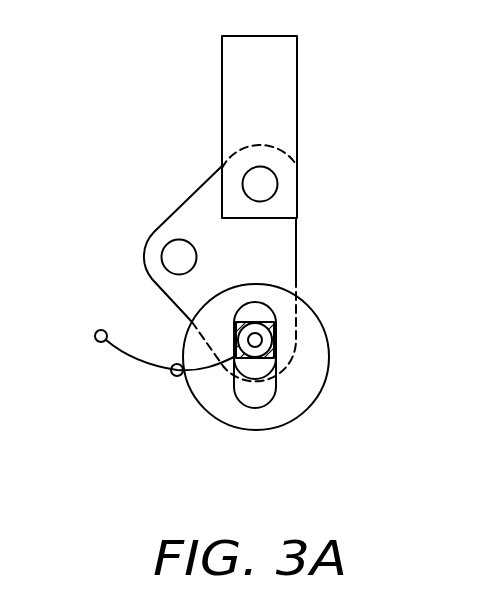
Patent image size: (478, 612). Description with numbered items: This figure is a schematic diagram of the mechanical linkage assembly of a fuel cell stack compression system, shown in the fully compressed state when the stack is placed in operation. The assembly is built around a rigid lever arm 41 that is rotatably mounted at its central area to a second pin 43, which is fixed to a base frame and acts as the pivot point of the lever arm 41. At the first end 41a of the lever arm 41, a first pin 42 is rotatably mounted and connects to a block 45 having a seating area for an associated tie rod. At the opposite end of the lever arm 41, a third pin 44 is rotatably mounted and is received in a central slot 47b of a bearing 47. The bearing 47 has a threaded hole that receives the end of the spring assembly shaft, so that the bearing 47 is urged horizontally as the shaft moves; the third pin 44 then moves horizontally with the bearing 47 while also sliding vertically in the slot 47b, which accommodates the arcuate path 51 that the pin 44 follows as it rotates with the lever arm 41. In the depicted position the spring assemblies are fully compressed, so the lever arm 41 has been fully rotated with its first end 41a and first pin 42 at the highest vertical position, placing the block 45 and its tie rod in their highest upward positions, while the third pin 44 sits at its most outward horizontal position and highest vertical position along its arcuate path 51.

The block 45 is at (278, 82).
The lever arm 41 is at (205, 203).
The first end of the lever arm 41a is at (297, 170).
The first pin 42 is at (267, 187).
The second pin 43 is at (172, 253).
The bearing 47 is at (315, 348).
The central slot 47b is at (268, 400).
The third pin 44 is at (276, 347).
The arcuate path 51 is at (133, 360).